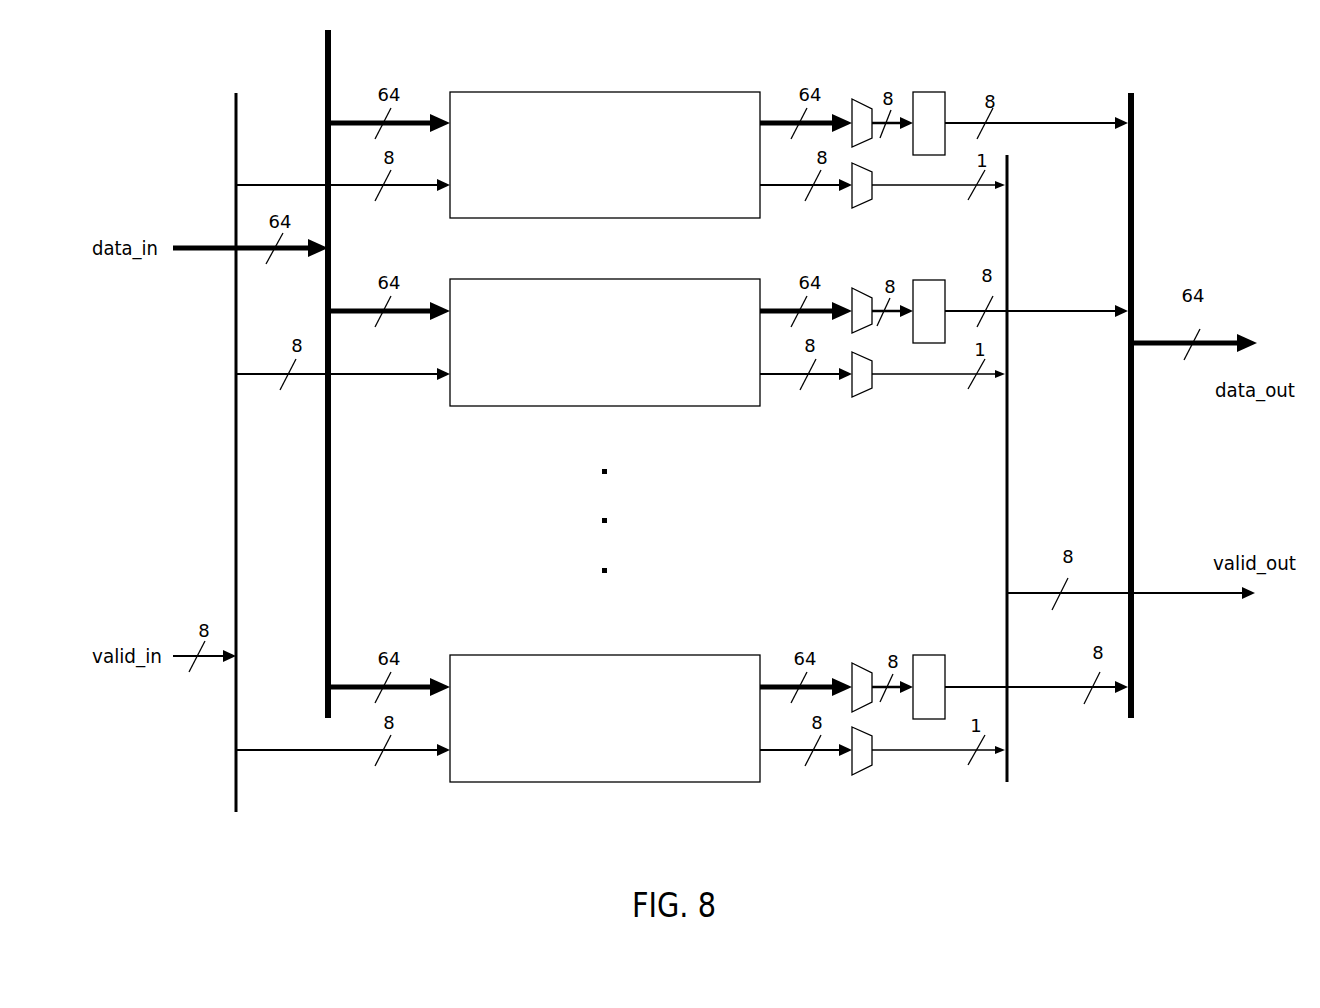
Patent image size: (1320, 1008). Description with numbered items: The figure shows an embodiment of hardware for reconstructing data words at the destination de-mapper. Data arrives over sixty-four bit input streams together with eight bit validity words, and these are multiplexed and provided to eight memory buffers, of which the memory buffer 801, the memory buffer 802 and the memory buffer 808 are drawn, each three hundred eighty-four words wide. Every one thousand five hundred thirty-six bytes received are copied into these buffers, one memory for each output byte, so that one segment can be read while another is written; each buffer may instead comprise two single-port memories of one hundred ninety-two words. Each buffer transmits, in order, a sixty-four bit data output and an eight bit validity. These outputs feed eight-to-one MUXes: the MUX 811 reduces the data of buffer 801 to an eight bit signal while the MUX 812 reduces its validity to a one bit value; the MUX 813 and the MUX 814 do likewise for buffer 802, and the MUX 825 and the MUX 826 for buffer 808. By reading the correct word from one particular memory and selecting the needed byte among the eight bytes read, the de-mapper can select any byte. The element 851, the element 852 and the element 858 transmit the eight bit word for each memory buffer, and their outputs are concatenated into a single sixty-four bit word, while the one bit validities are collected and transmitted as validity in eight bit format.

The memory buffer 801 is at (605, 155).
The memory buffer 802 is at (605, 342).
The memory buffer 808 is at (605, 718).
The 8 to one MUX 811 is at (873, 131).
The 8 to one MUX 812 is at (874, 192).
The 8 to one MUX 813 is at (871, 319).
The 8 to one MUX 814 is at (872, 382).
The 8 to one MUX 825 is at (871, 695).
The 8 to one MUX 826 is at (876, 759).
The output element 851 is at (929, 112).
The output element 852 is at (929, 300).
The output element 858 is at (929, 675).